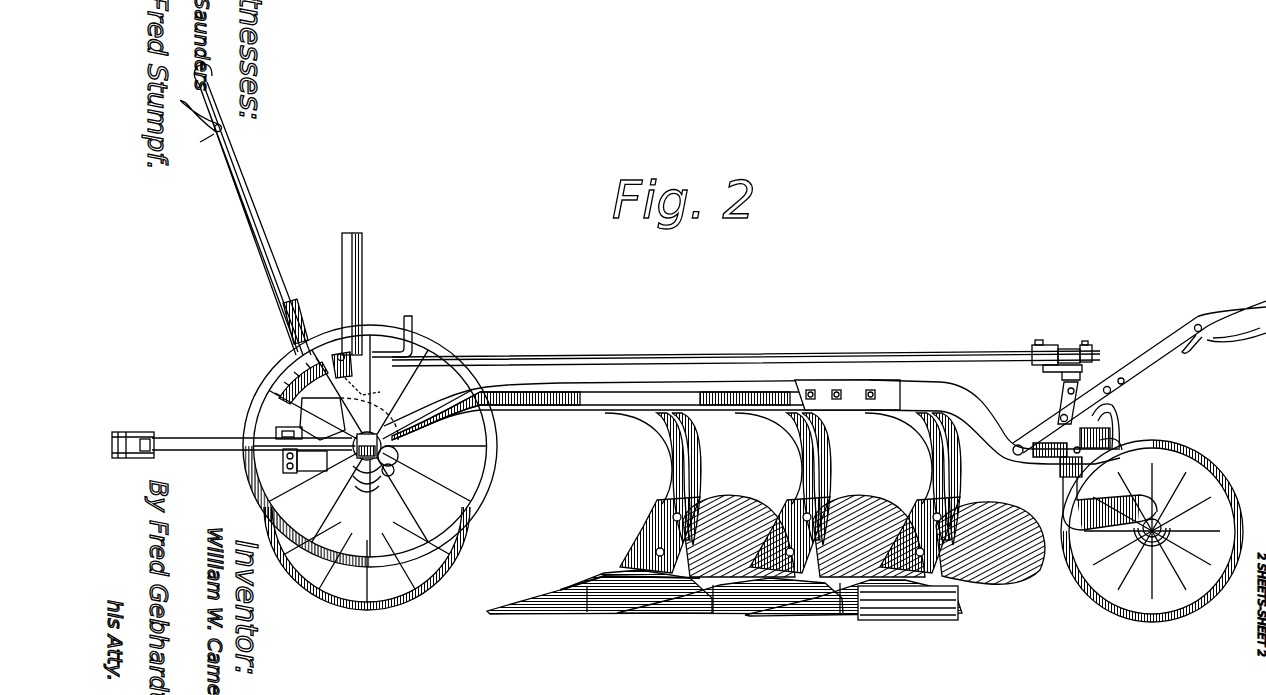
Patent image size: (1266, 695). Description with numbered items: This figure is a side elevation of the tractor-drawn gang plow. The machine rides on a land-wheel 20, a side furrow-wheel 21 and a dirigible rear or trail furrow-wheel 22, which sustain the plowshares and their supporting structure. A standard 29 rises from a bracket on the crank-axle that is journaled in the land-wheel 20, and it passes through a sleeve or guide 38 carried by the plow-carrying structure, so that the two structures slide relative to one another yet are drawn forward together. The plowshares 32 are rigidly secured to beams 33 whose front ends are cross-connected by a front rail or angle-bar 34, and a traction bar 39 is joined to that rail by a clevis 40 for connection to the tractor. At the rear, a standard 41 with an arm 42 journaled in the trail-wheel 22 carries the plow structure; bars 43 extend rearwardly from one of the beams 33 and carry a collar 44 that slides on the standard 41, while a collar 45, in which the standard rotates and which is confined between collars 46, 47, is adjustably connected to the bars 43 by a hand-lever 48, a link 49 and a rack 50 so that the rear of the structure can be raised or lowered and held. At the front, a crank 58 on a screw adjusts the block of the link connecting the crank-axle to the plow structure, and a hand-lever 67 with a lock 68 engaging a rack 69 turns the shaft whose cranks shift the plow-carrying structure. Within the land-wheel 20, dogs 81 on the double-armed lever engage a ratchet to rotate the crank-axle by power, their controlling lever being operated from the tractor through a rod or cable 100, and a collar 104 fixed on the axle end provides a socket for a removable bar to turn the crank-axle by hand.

The land-wheel 20 is at (496, 456).
The side furrow-wheel 21 is at (449, 553).
The rear or trail furrow-wheel 22 is at (1118, 612).
The standard 29 is at (363, 281).
The plowshares 32 is at (746, 496).
The beams 33 is at (657, 448).
The front rail or angle-bar 34 is at (288, 453).
The sleeve or guide 38 is at (340, 354).
The traction bar 39 is at (180, 444).
The clevis 40 is at (283, 436).
The standard 41 is at (1064, 495).
The arm 42 is at (1112, 512).
The bars 43 is at (955, 406).
The collar 44 is at (1080, 438).
The collar 45 is at (1060, 391).
The collar 46 is at (1080, 373).
The collar 47 is at (1112, 395).
The hand-lever 48 is at (1162, 350).
The link 49 is at (1062, 403).
The rack 50 is at (1112, 427).
The crank 58 is at (412, 322).
The hand-lever 67 is at (264, 210).
The lock 68 is at (289, 348).
The rack 69 is at (290, 374).
The dogs 81 is at (326, 416).
The rod or cable 100 is at (313, 461).
The collar 104 is at (418, 412).